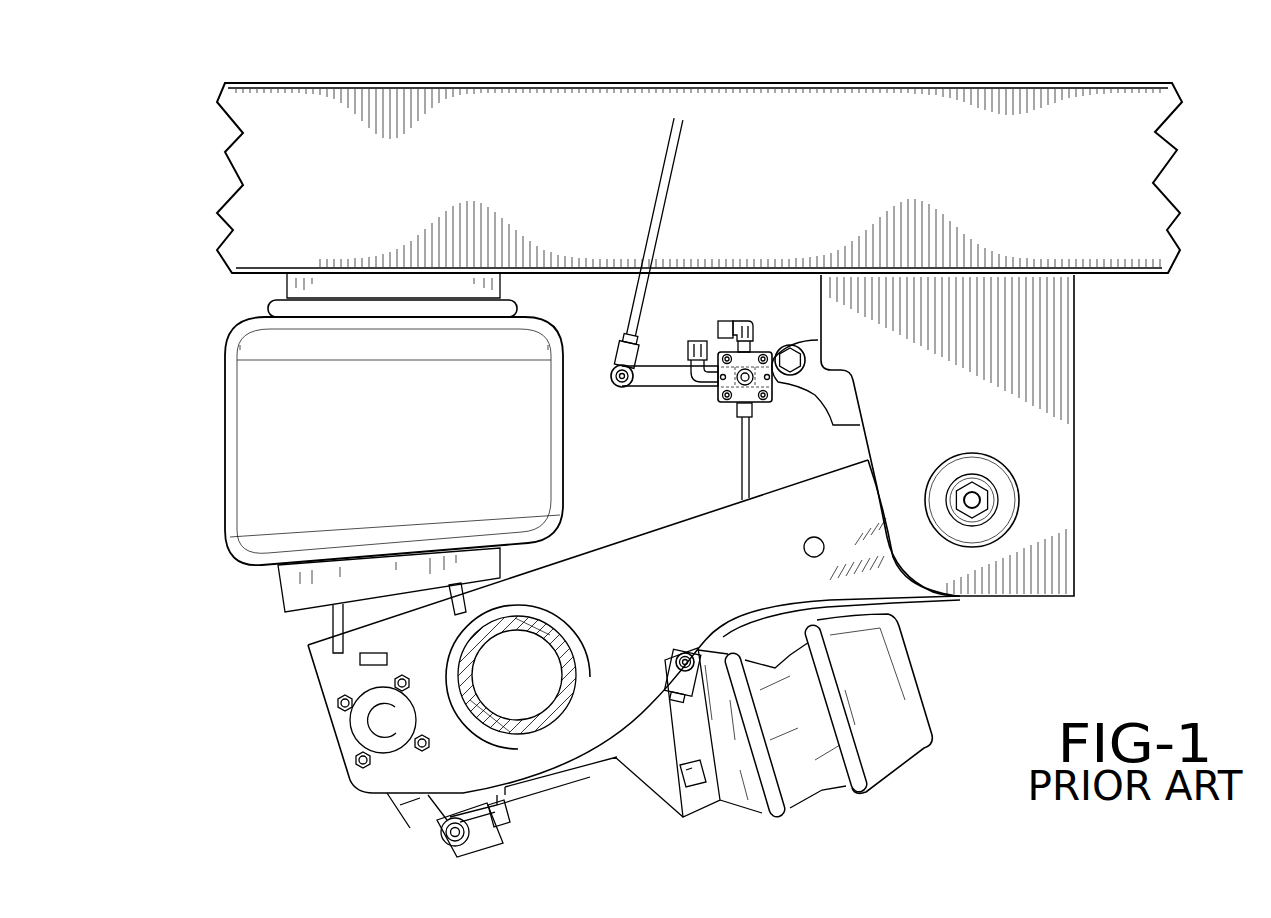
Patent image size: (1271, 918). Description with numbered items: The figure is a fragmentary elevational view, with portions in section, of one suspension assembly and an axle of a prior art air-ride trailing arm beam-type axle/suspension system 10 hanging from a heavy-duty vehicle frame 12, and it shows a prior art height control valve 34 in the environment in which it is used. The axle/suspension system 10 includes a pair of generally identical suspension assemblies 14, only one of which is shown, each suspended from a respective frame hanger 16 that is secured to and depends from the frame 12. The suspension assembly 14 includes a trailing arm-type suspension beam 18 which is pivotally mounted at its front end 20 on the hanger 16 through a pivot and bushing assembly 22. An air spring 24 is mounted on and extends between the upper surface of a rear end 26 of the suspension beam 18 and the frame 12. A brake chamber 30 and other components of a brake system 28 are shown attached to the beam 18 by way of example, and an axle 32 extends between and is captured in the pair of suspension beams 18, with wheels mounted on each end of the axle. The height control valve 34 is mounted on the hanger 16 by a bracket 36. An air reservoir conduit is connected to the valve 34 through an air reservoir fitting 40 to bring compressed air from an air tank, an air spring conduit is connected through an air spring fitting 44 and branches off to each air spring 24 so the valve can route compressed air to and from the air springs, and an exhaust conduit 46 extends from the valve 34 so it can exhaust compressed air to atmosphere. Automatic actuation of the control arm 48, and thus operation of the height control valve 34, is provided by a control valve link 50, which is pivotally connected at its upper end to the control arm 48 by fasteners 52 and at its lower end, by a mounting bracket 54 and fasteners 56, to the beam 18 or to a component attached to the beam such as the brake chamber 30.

The air-ride axle/suspension system 10 is at (253, 798).
The vehicle frame 12 is at (517, 83).
The suspension assembly 14 is at (308, 681).
The frame hanger 16 is at (1075, 367).
The suspension beam 18 is at (612, 543).
The front end 20 is at (845, 547).
The pivot and bushing assembly 22 is at (1005, 500).
The air spring 24 is at (225, 433).
The rear end 26 is at (380, 780).
The brake system 28 is at (500, 845).
The brake chamber 30 is at (886, 746).
The axle 32 is at (560, 723).
The height control valve 34 is at (716, 405).
The bracket 36 is at (788, 344).
The air reservoir fitting 40 is at (733, 320).
The air spring fitting 44 is at (690, 341).
The exhaust conduit 46 is at (752, 472).
The control arm 48 is at (640, 366).
The control valve link 50 is at (650, 474).
The fasteners 52 is at (616, 381).
The mounting bracket 54 is at (668, 662).
The fasteners 56 is at (693, 655).